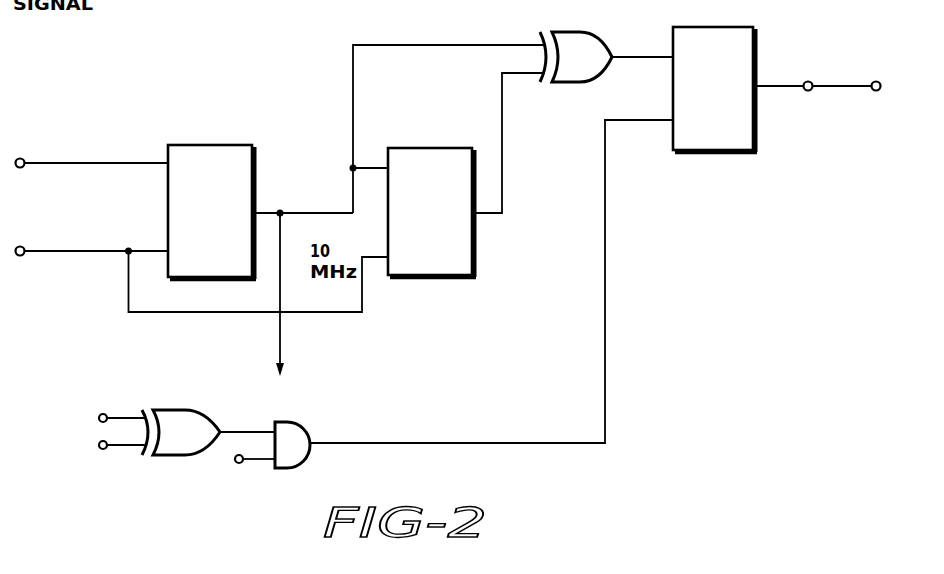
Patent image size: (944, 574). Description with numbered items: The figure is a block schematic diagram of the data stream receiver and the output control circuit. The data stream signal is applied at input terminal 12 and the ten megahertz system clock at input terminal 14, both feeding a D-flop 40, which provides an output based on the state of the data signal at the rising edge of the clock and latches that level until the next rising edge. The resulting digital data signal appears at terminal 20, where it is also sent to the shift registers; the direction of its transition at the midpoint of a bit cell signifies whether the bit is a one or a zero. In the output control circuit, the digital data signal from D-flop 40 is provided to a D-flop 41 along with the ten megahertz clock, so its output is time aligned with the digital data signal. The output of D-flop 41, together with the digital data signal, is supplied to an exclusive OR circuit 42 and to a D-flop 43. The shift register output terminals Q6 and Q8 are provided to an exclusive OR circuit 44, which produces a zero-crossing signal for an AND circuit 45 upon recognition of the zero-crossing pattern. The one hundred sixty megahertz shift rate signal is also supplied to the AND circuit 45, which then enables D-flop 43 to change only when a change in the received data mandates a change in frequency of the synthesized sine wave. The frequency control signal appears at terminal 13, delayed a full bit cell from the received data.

The input terminal 12 is at (22, 167).
The input terminal 14 is at (22, 255).
The terminal 20 is at (280, 210).
The D-flop 40 is at (236, 124).
The D-flop 41 is at (424, 148).
The exclusive OR circuit 42 is at (591, 33).
The D-flop 43 is at (742, 9).
The exclusive OR circuit 44 is at (200, 410).
The AND circuit 45 is at (308, 432).
The terminal 13 is at (806, 91).